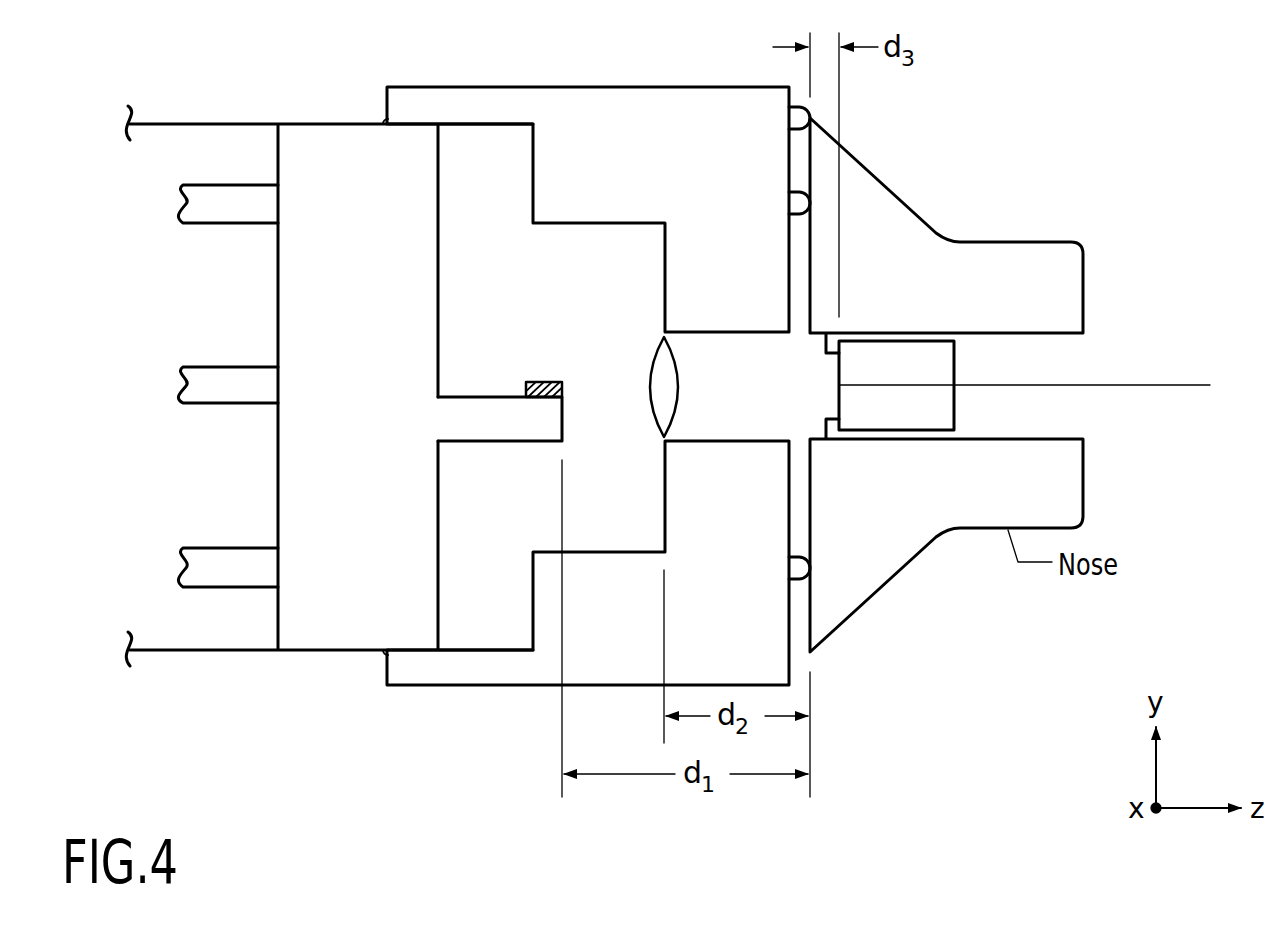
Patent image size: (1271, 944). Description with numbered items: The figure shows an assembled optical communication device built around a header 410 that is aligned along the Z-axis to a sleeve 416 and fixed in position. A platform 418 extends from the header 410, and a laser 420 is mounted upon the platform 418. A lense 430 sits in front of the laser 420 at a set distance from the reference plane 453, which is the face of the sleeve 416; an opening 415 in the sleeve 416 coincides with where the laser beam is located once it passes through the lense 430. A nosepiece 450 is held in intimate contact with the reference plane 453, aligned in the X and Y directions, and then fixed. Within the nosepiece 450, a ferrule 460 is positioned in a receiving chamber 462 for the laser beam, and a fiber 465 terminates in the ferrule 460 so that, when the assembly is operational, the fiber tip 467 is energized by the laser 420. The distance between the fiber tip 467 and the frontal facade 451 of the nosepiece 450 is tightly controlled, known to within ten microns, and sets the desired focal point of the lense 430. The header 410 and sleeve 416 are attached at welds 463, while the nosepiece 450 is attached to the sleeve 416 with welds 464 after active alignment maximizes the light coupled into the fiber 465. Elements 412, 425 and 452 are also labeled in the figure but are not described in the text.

The header 410 is at (321, 662).
The electrical leads 412 is at (215, 599).
The opening 415 is at (781, 344).
The sleeve 416 is at (590, 140).
The platform 418 is at (490, 430).
The laser 420 is at (527, 383).
The submount 425 is at (566, 390).
The lense 430 is at (652, 403).
The nosepiece 450 is at (934, 123).
The frontal facade 451 is at (809, 525).
The receptacle upper mating surface 452 is at (840, 330).
The reference plane 453 is at (822, 748).
The ferrule 460 is at (955, 365).
The receiving chamber 462 is at (1085, 333).
The welds 463 is at (383, 121).
The welds 464 is at (795, 118).
The fiber 465 is at (955, 422).
The fiber tip 467 is at (838, 386).